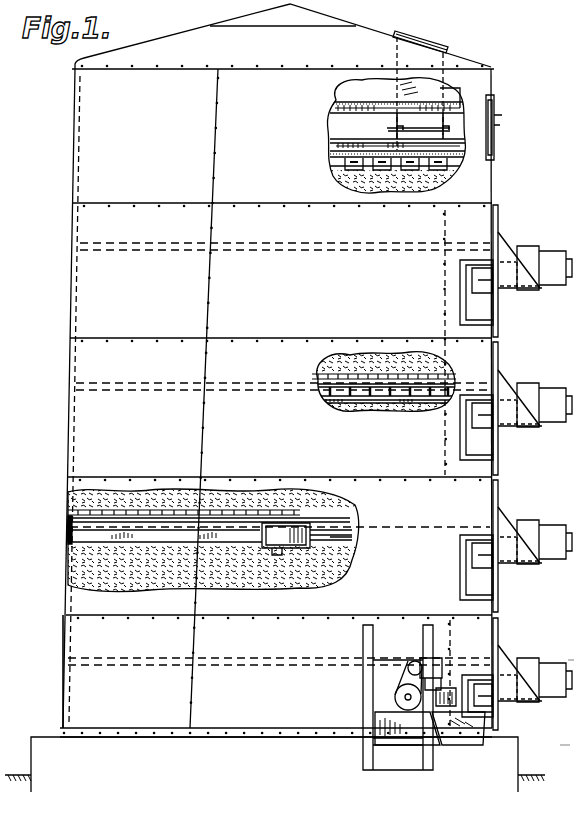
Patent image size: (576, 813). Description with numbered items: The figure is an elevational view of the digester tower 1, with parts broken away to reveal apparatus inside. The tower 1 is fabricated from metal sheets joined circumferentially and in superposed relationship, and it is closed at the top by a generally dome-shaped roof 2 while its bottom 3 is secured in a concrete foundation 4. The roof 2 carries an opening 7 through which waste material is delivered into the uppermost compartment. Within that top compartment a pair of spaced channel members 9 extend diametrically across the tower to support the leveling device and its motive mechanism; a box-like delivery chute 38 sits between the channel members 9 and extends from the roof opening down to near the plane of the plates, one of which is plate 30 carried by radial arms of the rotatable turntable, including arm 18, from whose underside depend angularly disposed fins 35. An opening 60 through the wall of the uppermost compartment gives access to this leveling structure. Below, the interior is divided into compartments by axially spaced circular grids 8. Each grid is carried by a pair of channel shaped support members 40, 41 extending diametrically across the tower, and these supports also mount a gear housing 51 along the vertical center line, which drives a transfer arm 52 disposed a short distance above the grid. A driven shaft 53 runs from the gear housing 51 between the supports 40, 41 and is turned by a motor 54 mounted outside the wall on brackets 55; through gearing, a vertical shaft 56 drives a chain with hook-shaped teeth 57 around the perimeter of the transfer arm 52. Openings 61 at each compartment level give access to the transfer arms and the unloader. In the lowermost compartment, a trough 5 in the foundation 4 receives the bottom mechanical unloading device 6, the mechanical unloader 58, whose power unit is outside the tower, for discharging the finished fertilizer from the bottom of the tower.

The digester tower 1 is at (73, 286).
The roof 2 is at (176, 43).
The bottom 3 is at (36, 616).
The concrete foundation 4 is at (42, 740).
The trough 5 is at (366, 753).
The bottom mechanical unloading device 6 is at (450, 758).
The opening 7 is at (434, 44).
The grids 8 is at (287, 252).
The channel members 9 is at (363, 101).
The arm 18 is at (334, 146).
The plate 30 is at (397, 126).
The fins 35 is at (366, 178).
The delivery chute 38 is at (448, 93).
The channel shaped support member 40 is at (346, 405).
The channel shaped support member 41 is at (96, 530).
The gear housing 51 is at (292, 542).
The transfer arm 52 is at (384, 376).
The driven shaft 53 is at (352, 531).
The motor 54 is at (556, 246).
The brackets 55 is at (528, 291).
The vertical shaft 56 is at (571, 648).
The hook-shaped teeth 57 is at (68, 498).
The mechanical unloader 58 is at (568, 754).
The opening 60 is at (499, 128).
The openings 61 is at (478, 272).